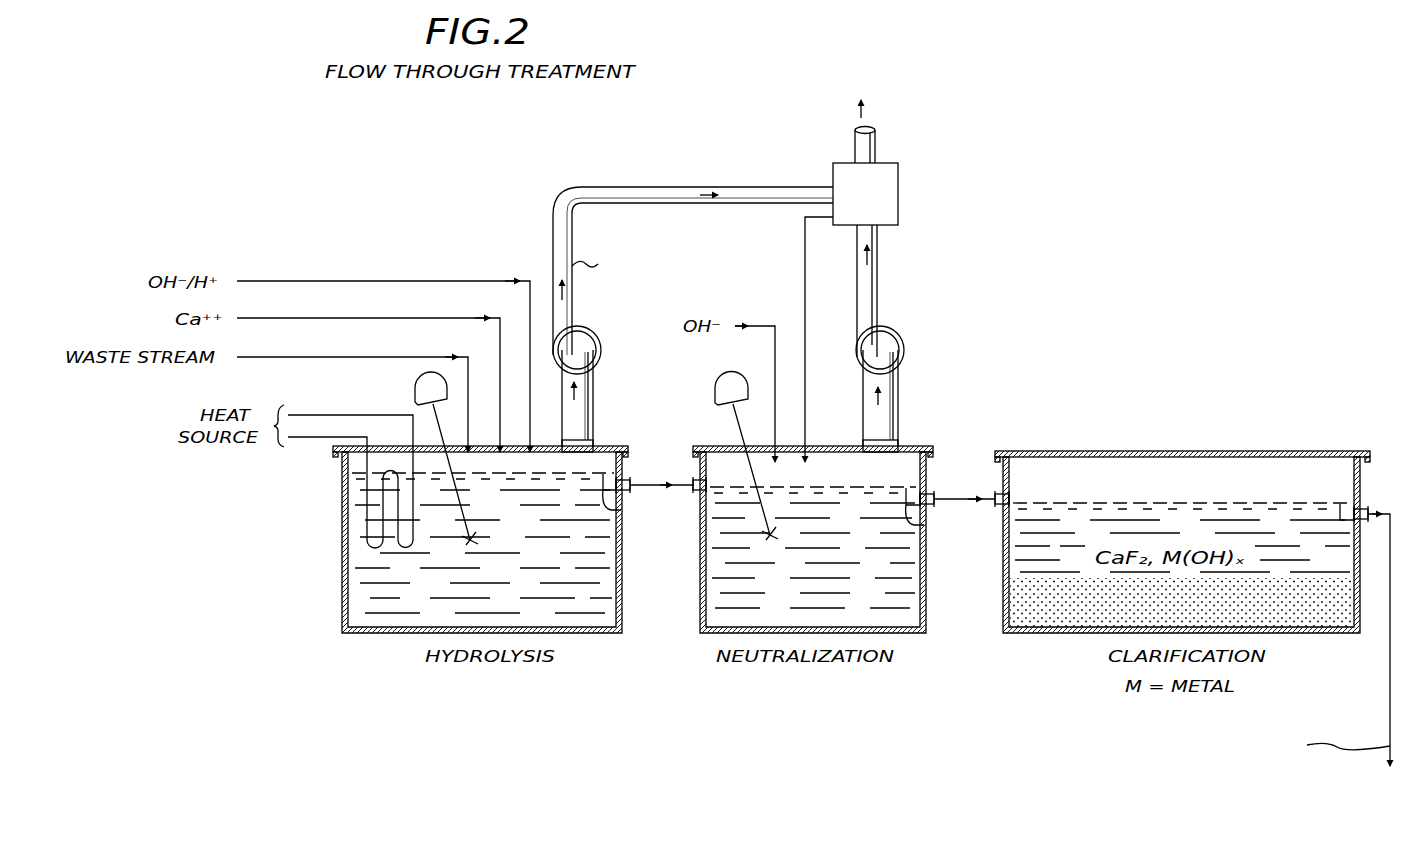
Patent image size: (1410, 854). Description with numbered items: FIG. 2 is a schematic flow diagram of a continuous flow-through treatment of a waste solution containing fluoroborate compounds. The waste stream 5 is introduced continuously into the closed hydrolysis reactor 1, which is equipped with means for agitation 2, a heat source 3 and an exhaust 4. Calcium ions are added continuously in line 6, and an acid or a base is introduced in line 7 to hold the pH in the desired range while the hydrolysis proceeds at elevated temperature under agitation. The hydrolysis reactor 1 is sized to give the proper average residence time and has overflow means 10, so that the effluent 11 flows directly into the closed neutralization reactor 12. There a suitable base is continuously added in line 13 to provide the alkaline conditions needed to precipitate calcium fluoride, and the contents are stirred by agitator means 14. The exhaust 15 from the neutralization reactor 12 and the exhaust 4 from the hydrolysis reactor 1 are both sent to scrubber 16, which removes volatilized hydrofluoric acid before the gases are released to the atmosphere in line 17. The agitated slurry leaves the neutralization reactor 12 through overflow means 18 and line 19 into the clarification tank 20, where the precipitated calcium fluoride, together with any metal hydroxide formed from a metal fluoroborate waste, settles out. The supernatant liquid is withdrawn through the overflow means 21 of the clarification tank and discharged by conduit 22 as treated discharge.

The hydrolysis reactor 1 is at (342, 573).
The means for agitation 2 is at (458, 502).
The heat source 3 is at (410, 552).
The exhaust 4 is at (592, 384).
The waste stream 5 is at (337, 361).
The calcium ion addition line 6 is at (500, 342).
The acid or base line 7 is at (530, 300).
The overflow means 10 is at (621, 510).
The effluent 11 is at (669, 470).
The neutralization reactor 12 is at (702, 599).
The base addition line 13 is at (774, 356).
The agitator means 14 is at (760, 508).
The exhaust 15 is at (877, 272).
The scrubber 16 is at (898, 192).
The release line 17 is at (872, 132).
The overflow means 18 is at (924, 525).
The line 19 is at (958, 494).
The clarification tank 20 is at (1003, 626).
The clarification tank outlet 21 is at (1342, 522).
The conduit 22 is at (1390, 691).